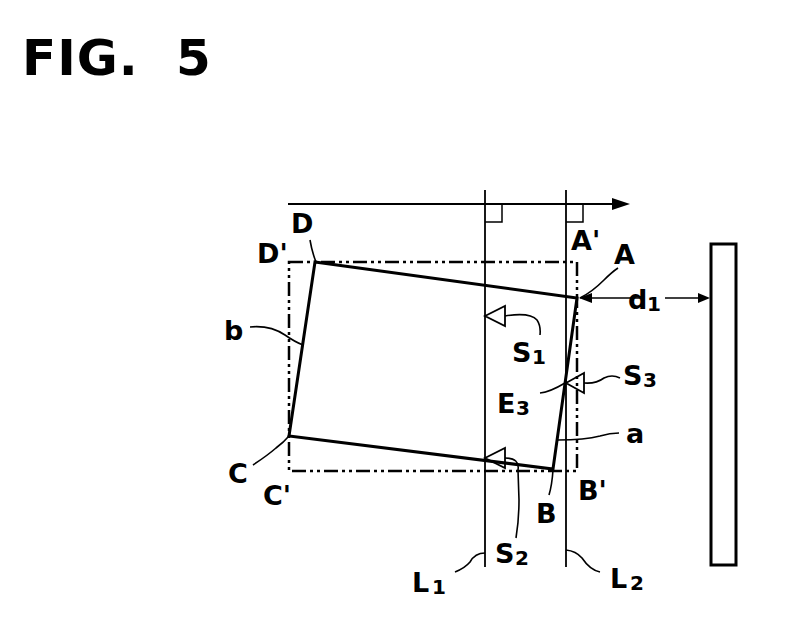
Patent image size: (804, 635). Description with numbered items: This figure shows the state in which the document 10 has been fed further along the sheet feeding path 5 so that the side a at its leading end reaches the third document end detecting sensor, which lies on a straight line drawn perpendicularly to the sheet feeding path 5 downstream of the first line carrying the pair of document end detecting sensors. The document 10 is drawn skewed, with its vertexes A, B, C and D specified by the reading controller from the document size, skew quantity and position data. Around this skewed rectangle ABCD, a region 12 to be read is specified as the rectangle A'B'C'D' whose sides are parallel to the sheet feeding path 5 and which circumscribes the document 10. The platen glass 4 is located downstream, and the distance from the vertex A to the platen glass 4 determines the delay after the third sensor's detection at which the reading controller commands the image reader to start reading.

The platen glass 4 is at (720, 256).
The sheet feeding path 5 is at (447, 203).
The document 10 is at (374, 433).
The region to be read 12 is at (298, 303).